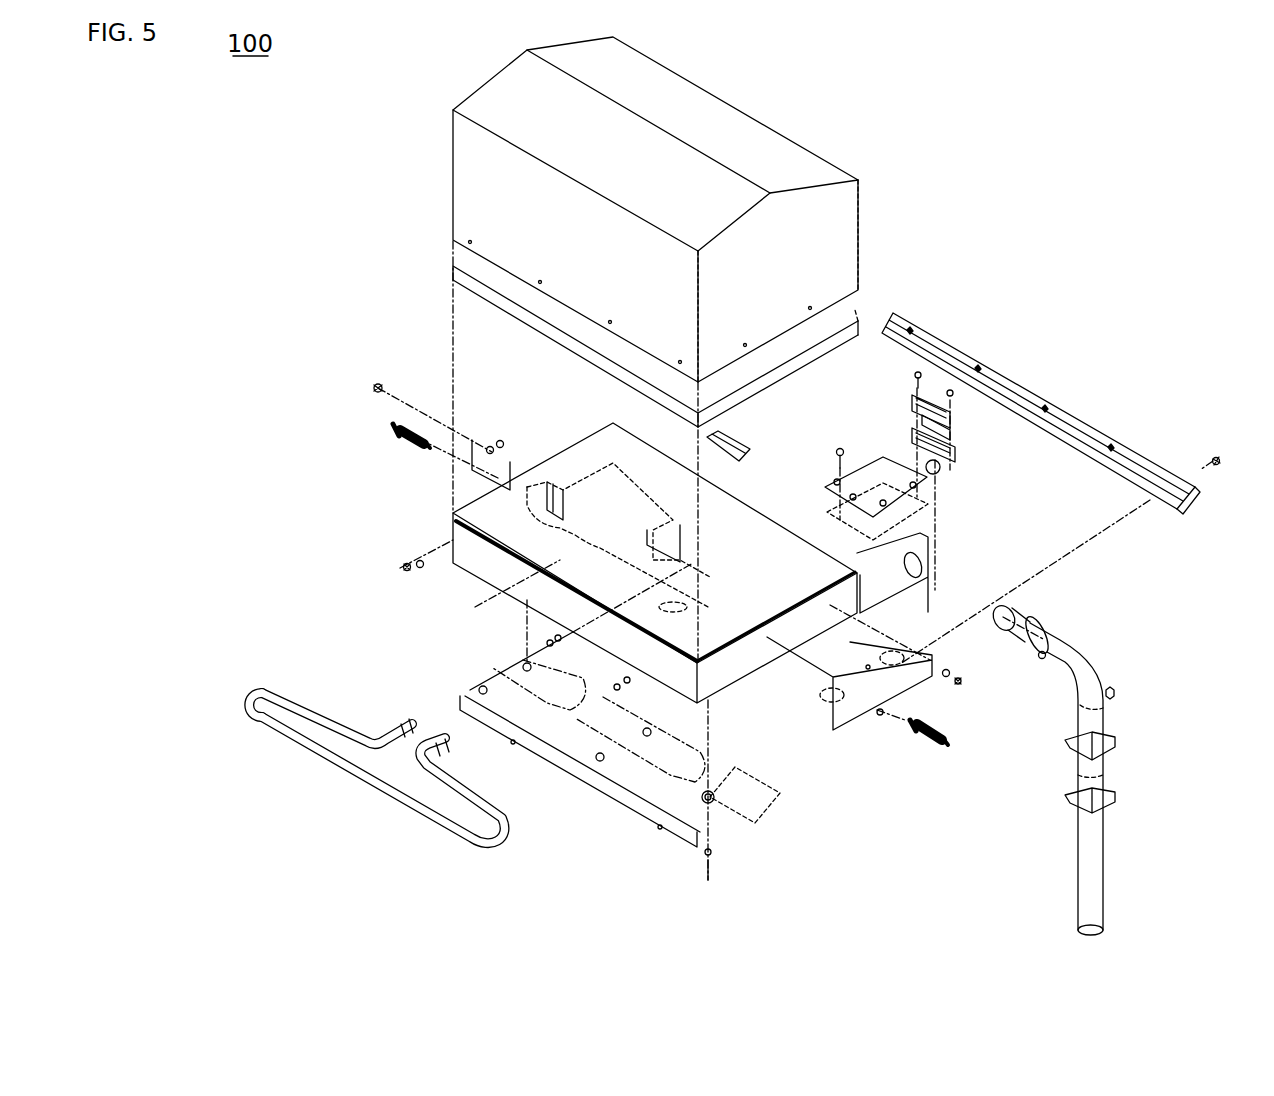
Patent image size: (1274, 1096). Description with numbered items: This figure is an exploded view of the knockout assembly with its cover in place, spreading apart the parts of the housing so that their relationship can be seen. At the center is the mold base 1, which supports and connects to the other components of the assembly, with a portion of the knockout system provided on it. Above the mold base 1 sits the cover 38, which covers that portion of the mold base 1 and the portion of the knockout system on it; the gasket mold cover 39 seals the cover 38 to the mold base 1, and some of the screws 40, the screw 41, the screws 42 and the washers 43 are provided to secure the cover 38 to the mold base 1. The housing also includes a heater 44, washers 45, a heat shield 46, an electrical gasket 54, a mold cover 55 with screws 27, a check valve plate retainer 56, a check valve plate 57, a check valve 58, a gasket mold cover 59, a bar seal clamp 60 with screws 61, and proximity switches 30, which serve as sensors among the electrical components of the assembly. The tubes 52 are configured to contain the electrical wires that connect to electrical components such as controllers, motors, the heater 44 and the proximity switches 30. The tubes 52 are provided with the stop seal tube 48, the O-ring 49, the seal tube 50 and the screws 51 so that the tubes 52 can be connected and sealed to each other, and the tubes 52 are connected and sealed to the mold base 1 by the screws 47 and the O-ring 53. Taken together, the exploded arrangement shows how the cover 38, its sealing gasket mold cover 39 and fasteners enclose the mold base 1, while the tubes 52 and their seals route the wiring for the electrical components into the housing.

The mold base 1 is at (588, 436).
The screws 27 is at (840, 446).
The proximity switches 30 is at (395, 431).
The cover 38 is at (455, 108).
The gasket mold cover 39 is at (455, 276).
The screws 40 is at (500, 442).
The screw 41 is at (375, 387).
The screws 42 is at (402, 567).
The washers 43 is at (418, 568).
The heater 44 is at (284, 688).
The washers 45 is at (716, 803).
The heat shield 46 is at (771, 797).
The screws 47 is at (1042, 659).
The stop seal tube 48 is at (1114, 799).
The O-ring 49 is at (1106, 773).
The seal tube 50 is at (1118, 745).
The screws 51 is at (1116, 693).
The tubes 52 is at (1084, 654).
The O-ring 53 is at (1013, 612).
The electrical gasket 54 is at (930, 512).
The mold cover 55 is at (927, 489).
The check valve plate retainer 56 is at (953, 417).
The check valve plate 57 is at (947, 431).
The check valve 58 is at (955, 461).
The gasket mold cover 59 is at (1180, 509).
The bar seal clamp 60 is at (1200, 494).
The screws 61 is at (1215, 458).